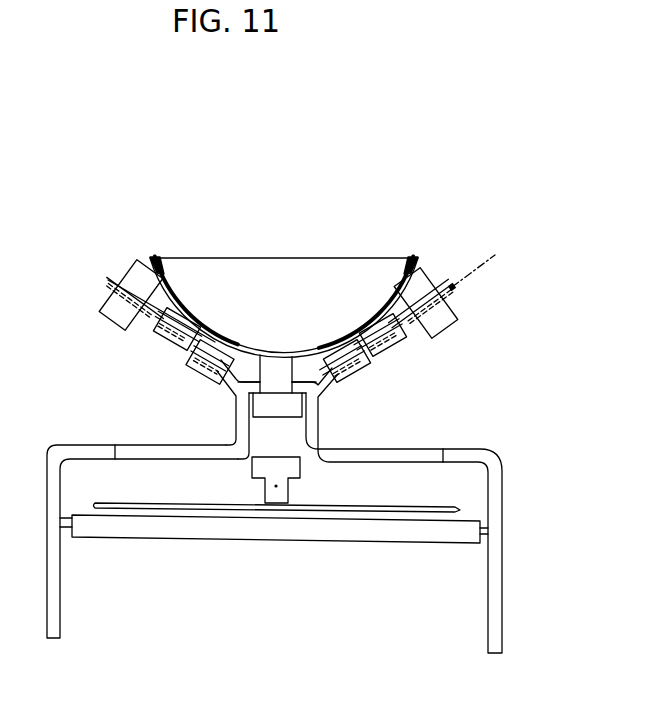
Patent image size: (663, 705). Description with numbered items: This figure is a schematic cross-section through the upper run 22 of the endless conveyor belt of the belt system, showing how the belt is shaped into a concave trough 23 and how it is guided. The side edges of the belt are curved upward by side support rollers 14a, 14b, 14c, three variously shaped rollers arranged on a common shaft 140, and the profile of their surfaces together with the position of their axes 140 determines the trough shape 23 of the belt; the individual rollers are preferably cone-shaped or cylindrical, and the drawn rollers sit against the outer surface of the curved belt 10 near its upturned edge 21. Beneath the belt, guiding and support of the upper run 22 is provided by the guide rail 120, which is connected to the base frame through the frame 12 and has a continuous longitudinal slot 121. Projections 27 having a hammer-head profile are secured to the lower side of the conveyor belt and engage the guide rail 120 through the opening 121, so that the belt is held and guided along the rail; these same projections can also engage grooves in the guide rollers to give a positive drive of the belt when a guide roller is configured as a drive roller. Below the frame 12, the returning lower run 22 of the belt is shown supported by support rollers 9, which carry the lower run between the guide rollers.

The support rollers 9 is at (150, 528).
The bowl-shaped electrode 10 is at (328, 272).
The frame 12 is at (499, 480).
The support roller 14a is at (445, 323).
The support roller 14b is at (398, 348).
The support roller 14c is at (362, 373).
The electrode layer 21 is at (416, 264).
The upper run 22 is at (458, 509).
The trough 23 is at (170, 287).
The projections 27 is at (297, 405).
The guide rail 120 is at (237, 399).
The longitudinal slot 121 is at (264, 386).
The shaft 140 is at (483, 270).